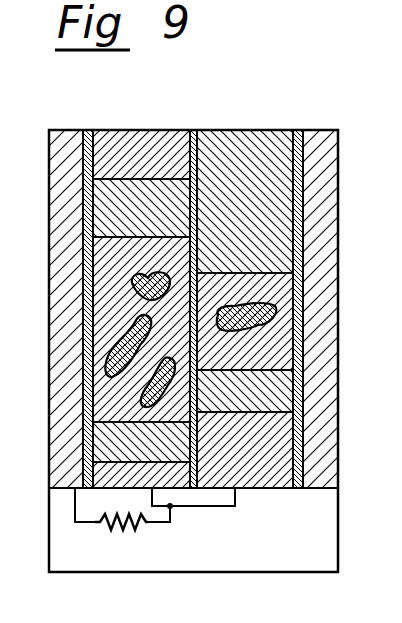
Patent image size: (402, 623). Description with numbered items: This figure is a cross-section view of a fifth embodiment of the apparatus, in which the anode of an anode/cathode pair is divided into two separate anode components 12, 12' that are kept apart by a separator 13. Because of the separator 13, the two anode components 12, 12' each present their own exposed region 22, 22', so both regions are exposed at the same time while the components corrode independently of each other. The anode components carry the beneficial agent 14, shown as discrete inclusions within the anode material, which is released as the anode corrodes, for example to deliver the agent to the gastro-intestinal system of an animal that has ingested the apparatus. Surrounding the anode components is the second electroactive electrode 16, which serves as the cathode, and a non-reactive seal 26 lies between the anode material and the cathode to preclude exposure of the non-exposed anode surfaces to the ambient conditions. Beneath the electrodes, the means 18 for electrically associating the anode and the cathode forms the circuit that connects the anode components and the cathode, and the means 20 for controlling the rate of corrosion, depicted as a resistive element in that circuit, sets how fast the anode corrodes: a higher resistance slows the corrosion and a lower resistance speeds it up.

The anode component 12 is at (141, 276).
The anode component 12' is at (245, 274).
The separator 13 is at (192, 131).
The beneficial agent 14 is at (278, 310).
The second electroactive electrode 16 is at (346, 229).
The means for electrically associating the anode and the cathode 18 is at (124, 528).
The means for controlling the rate of corrosion of the anode 20 is at (120, 527).
The exposed region 22 is at (105, 286).
The exposed region 22' is at (296, 284).
The seal 26 is at (303, 169).